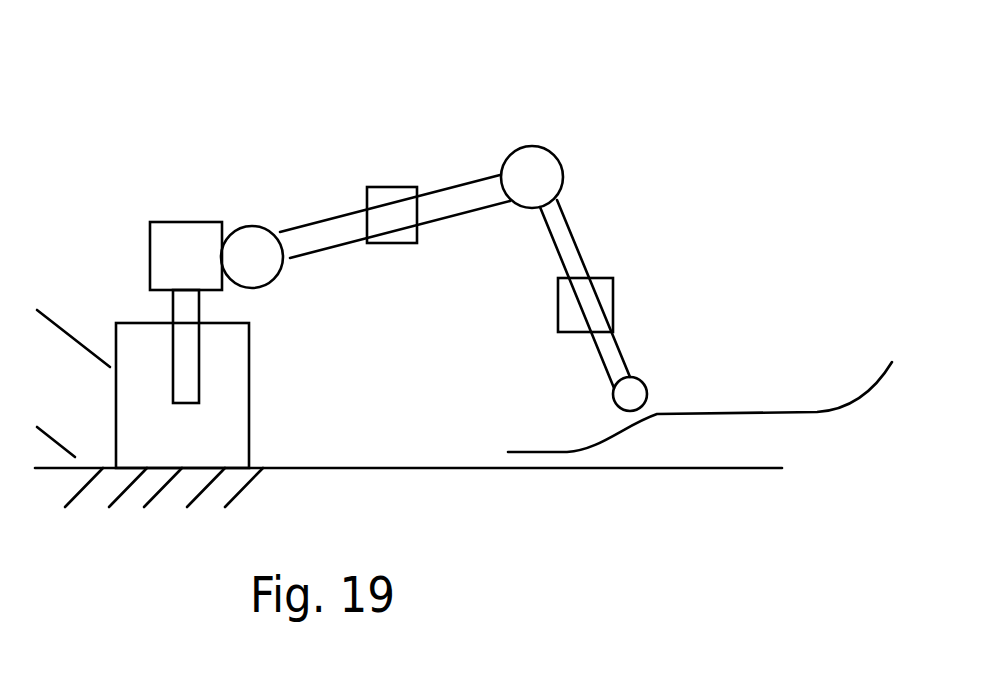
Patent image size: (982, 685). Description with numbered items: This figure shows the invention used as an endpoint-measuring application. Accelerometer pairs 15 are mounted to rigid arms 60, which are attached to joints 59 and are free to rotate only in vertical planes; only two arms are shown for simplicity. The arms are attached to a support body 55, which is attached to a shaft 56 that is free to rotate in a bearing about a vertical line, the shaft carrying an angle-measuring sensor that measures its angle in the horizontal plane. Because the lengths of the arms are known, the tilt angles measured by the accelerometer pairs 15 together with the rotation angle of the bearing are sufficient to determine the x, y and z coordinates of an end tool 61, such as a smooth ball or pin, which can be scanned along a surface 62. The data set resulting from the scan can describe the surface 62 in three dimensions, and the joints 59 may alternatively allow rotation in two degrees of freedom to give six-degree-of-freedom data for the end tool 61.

The accelerometer pairs 15 is at (377, 178).
The support body 55 is at (183, 217).
The shaft 56 is at (167, 310).
The joints 59 is at (238, 220).
The rigid arms 60 is at (327, 250).
The end tool 61 is at (657, 377).
The surface 62 is at (798, 402).